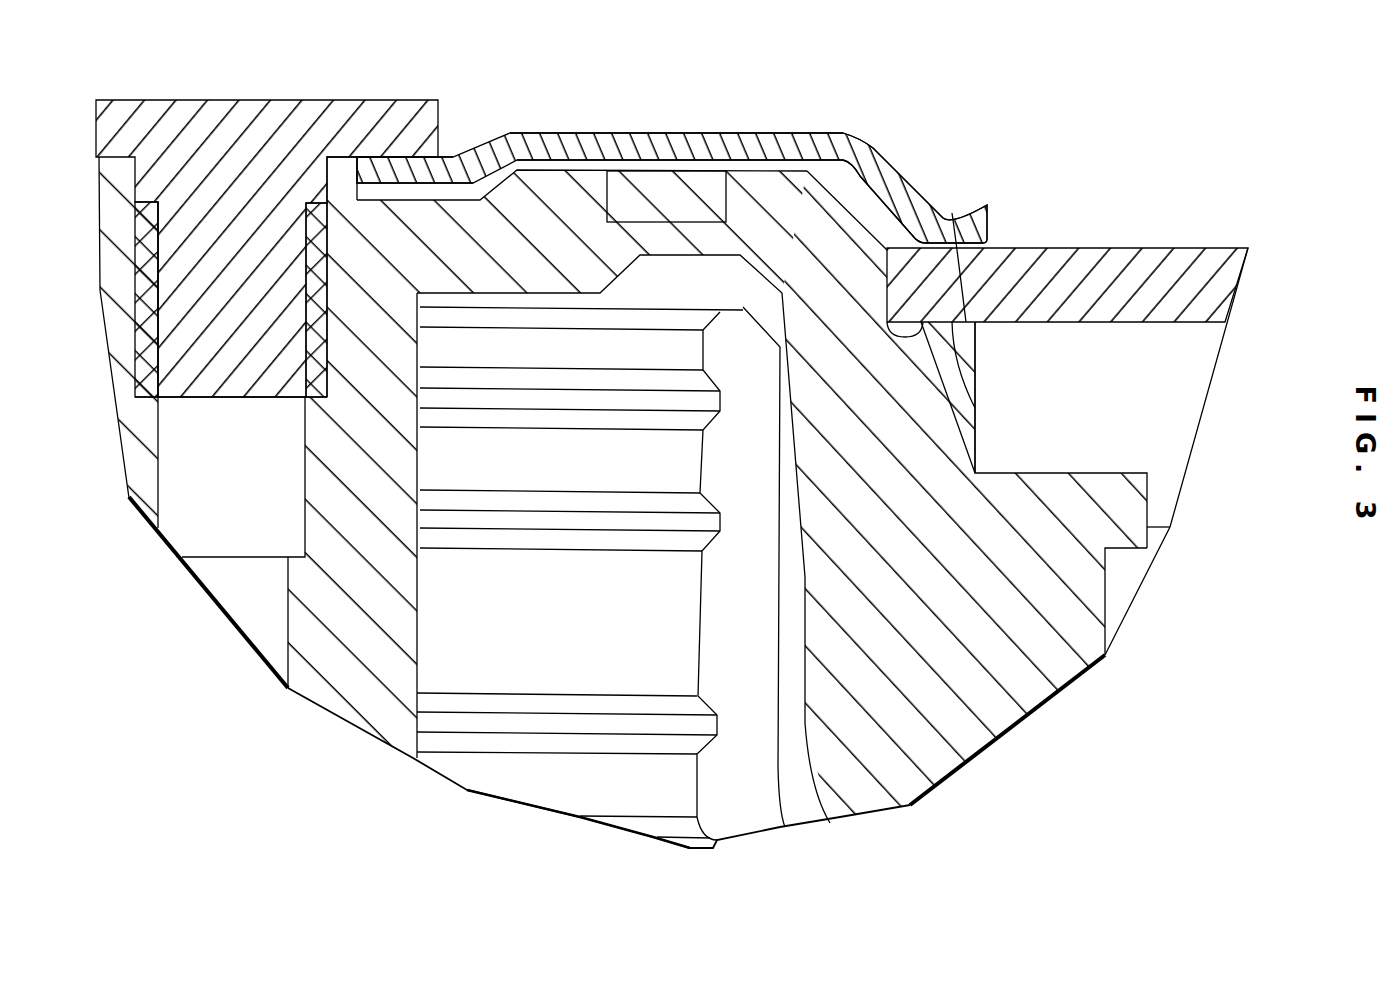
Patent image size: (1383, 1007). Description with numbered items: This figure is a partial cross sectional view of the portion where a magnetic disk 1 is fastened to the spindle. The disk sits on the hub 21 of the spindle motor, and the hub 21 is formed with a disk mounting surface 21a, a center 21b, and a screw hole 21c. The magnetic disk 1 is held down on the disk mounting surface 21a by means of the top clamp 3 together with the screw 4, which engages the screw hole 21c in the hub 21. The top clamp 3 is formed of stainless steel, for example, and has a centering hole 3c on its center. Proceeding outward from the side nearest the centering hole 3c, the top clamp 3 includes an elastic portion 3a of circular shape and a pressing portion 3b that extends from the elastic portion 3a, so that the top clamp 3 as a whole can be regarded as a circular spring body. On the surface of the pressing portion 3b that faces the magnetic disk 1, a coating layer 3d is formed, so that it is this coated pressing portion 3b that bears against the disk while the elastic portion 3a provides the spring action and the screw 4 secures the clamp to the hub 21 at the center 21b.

The magnetic disk 1 is at (1142, 248).
The top clamp 3 is at (673, 167).
The elastic portion 3a is at (710, 133).
The pressing portion 3b is at (952, 213).
The centering hole 3c is at (385, 175).
The coating layer 3d is at (980, 322).
The screw 4 is at (312, 100).
The hub 21 is at (673, 449).
The disk mounting surface 21a is at (977, 407).
The center 21b is at (843, 210).
The screw hole 21c is at (293, 310).